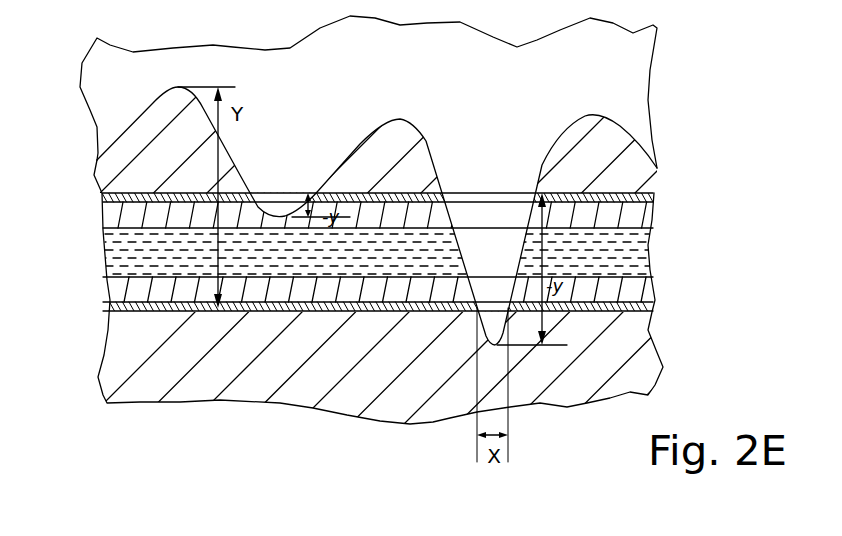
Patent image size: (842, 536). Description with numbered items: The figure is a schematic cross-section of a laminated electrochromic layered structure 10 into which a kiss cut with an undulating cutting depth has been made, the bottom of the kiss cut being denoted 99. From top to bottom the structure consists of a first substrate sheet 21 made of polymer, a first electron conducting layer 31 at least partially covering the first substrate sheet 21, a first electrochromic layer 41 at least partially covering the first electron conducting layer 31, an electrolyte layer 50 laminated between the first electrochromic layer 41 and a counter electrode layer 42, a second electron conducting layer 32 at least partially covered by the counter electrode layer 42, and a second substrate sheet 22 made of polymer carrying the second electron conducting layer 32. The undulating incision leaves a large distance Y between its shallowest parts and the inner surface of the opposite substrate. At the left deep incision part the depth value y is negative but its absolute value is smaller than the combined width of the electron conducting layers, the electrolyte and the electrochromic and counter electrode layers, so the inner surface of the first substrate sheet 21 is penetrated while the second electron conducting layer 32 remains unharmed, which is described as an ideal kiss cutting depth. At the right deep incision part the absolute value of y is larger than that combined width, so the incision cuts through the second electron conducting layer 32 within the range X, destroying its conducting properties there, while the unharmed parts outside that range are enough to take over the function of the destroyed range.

The laminated electrochromic layered structure 10 is at (389, 253).
The bottom of the kiss cut 99 is at (118, 133).
The first substrate sheet 21 is at (110, 167).
The first electron conducting layer 31 is at (108, 197).
The first electrochromic layer 41 is at (110, 219).
The electrolyte layer 50 is at (108, 258).
The counter electrode layer 42 is at (108, 285).
The second electron conducting layer 32 is at (108, 308).
The second substrate sheet 22 is at (110, 333).